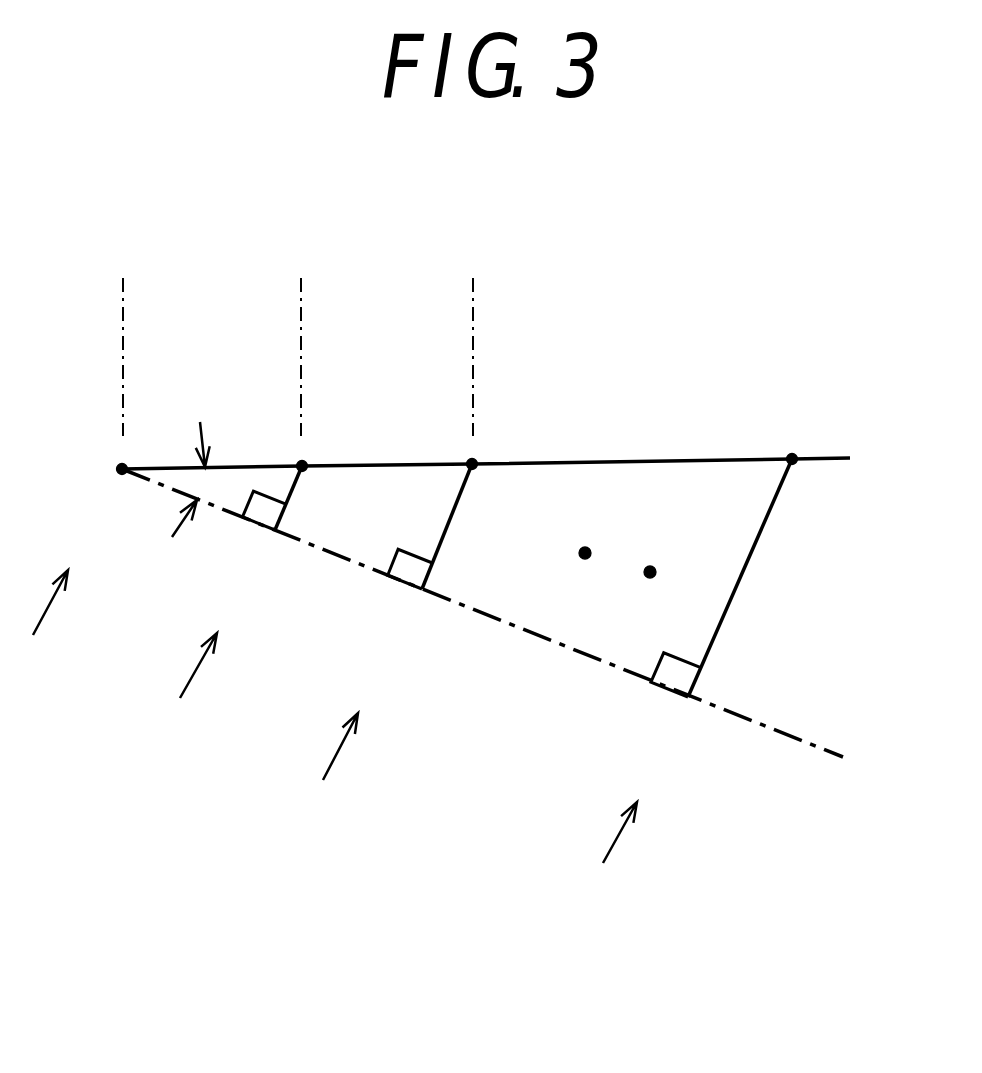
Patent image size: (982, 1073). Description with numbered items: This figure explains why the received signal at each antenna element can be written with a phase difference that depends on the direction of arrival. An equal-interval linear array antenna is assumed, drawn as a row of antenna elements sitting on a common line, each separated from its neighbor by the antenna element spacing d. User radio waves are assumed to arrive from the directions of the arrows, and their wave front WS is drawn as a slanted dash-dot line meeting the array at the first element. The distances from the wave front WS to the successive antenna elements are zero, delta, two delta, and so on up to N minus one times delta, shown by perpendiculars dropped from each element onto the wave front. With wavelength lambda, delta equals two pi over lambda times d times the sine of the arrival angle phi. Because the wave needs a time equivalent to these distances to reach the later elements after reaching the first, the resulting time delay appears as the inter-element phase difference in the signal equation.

The wave front WS is at (817, 750).
The antenna element spacing d is at (123, 310).